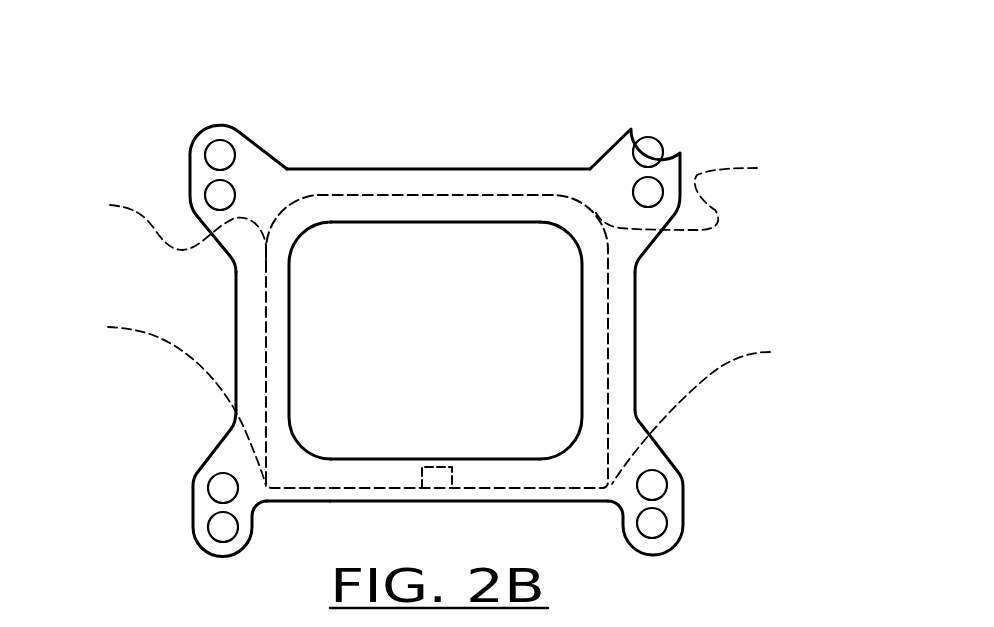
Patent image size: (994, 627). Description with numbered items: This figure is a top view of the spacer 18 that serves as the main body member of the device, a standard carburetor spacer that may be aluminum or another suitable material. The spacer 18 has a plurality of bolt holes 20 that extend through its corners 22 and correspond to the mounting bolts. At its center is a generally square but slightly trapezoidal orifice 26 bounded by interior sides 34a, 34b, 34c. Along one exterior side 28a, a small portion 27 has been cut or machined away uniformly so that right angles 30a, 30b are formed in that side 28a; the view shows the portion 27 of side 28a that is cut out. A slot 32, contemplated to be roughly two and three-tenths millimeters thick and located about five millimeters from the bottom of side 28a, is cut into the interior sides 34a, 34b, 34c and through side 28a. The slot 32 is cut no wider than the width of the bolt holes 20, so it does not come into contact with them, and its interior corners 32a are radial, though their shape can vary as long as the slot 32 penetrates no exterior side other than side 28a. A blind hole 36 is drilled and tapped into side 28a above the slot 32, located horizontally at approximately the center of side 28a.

The spacer 18 is at (463, 321).
The bolt holes 20 is at (232, 185).
The corners 22 is at (190, 155).
The orifice 26 is at (435, 340).
The portion 27 is at (295, 497).
The exterior side 28a is at (360, 502).
The right angle 30a is at (158, 400).
The right angle 30b is at (717, 412).
The slot 32 is at (390, 194).
The interior corners 32a is at (431, 209).
The interior side 34a is at (290, 365).
The interior side 34b is at (417, 222).
The interior side 34c is at (582, 311).
The blind hole 36 is at (427, 466).